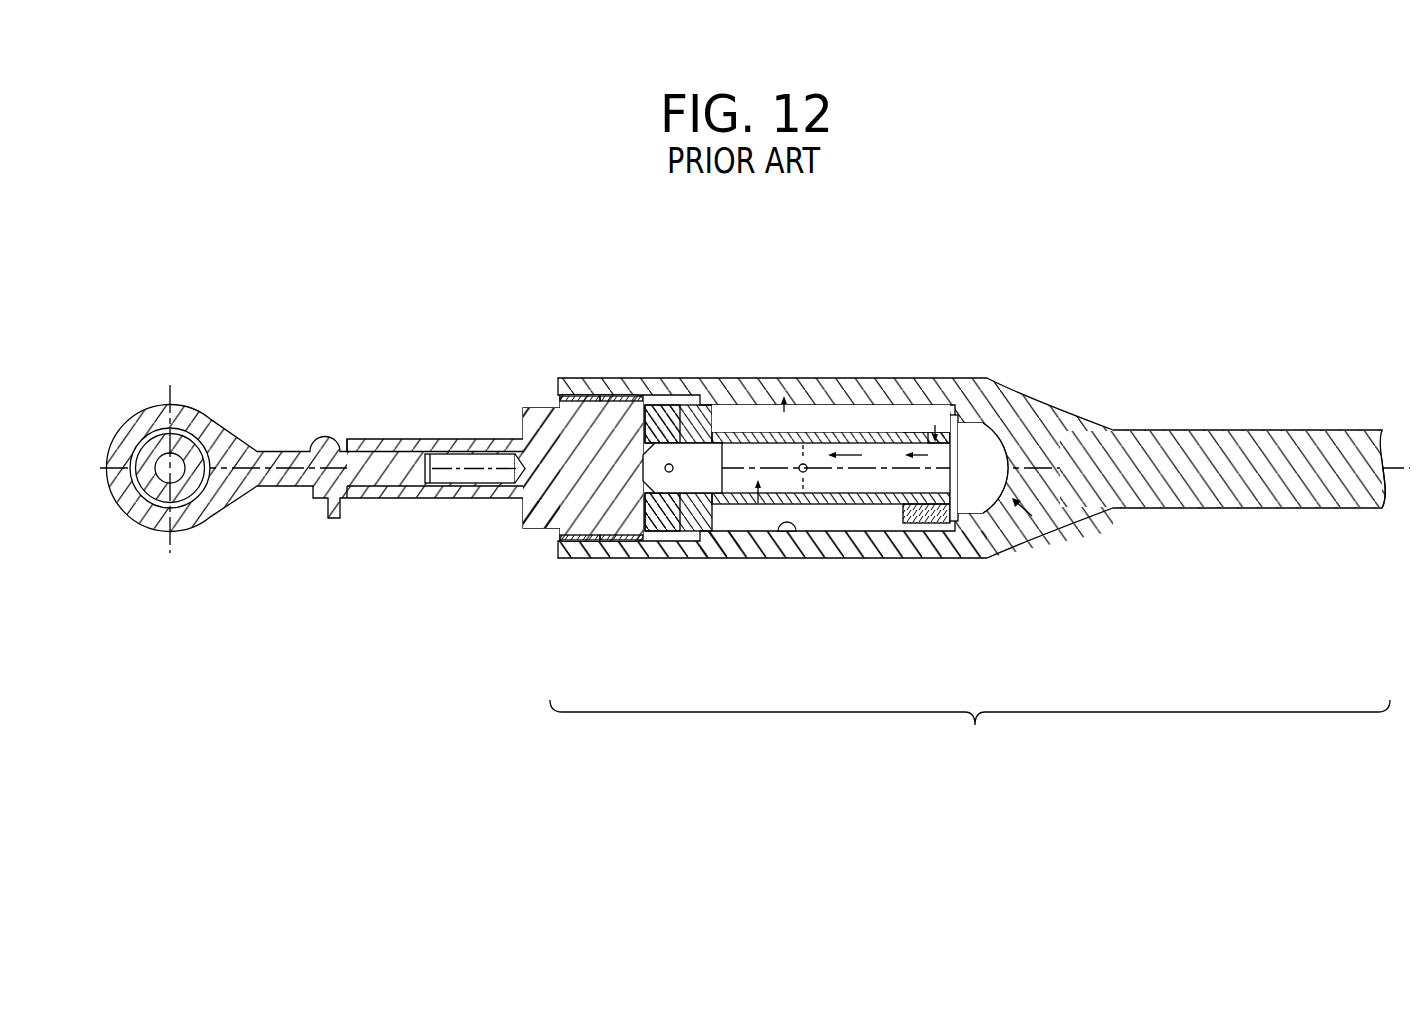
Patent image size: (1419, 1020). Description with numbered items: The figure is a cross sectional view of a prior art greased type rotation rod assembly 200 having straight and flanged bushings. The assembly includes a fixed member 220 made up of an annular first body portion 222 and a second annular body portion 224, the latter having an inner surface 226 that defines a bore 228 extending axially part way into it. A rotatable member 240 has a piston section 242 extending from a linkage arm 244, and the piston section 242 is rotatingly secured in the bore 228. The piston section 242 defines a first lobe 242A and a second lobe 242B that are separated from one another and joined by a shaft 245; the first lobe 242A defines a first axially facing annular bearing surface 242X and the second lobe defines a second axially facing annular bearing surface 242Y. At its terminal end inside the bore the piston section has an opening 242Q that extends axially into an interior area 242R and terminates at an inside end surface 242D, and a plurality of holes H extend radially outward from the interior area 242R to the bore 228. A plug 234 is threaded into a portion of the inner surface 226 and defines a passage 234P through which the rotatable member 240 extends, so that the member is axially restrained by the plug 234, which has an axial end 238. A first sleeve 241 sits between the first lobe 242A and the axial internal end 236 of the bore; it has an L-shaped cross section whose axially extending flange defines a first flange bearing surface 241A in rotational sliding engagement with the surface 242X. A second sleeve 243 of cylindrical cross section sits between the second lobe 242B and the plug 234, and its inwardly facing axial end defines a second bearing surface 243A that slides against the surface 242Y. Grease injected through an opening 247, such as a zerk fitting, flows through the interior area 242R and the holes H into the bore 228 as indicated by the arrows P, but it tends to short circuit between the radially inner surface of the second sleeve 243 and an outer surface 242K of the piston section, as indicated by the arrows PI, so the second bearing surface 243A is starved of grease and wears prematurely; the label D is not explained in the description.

The prior art greased type rotation rod assembly 200 is at (1040, 275).
The fixed member 220 is at (970, 732).
The annular first body portion 222 is at (1265, 428).
The second annular body portion 224 is at (883, 380).
The inner surface 226 is at (800, 555).
The bore 228 is at (815, 380).
The plug 234 is at (547, 422).
The passage 234P is at (522, 528).
The axial internal end 236 is at (990, 553).
The axial end 238 is at (628, 558).
The rotatable member 240 is at (437, 502).
The first sleeve 241 is at (945, 553).
The first flange bearing surface 241A is at (898, 557).
The piston section 242 is at (760, 380).
The first lobe 242A is at (912, 380).
The second lobe 242B is at (728, 380).
The inside end surface 242D is at (562, 562).
The outer surface 242K is at (673, 555).
The opening 242Q is at (1023, 540).
The interior area 242R is at (767, 555).
The first axially facing annular bearing surface 242X is at (947, 380).
The second axially facing annular bearing surface 242Y is at (715, 380).
The second sleeve 243 is at (690, 555).
The second bearing surface 243A is at (680, 380).
The linkage arm 244 is at (543, 470).
The shaft 245 is at (868, 540).
The opening 247 is at (1060, 540).
The diameter D is at (713, 555).
The holes H is at (667, 380).
The arrows P is at (678, 445).
The arrows PI is at (600, 378).